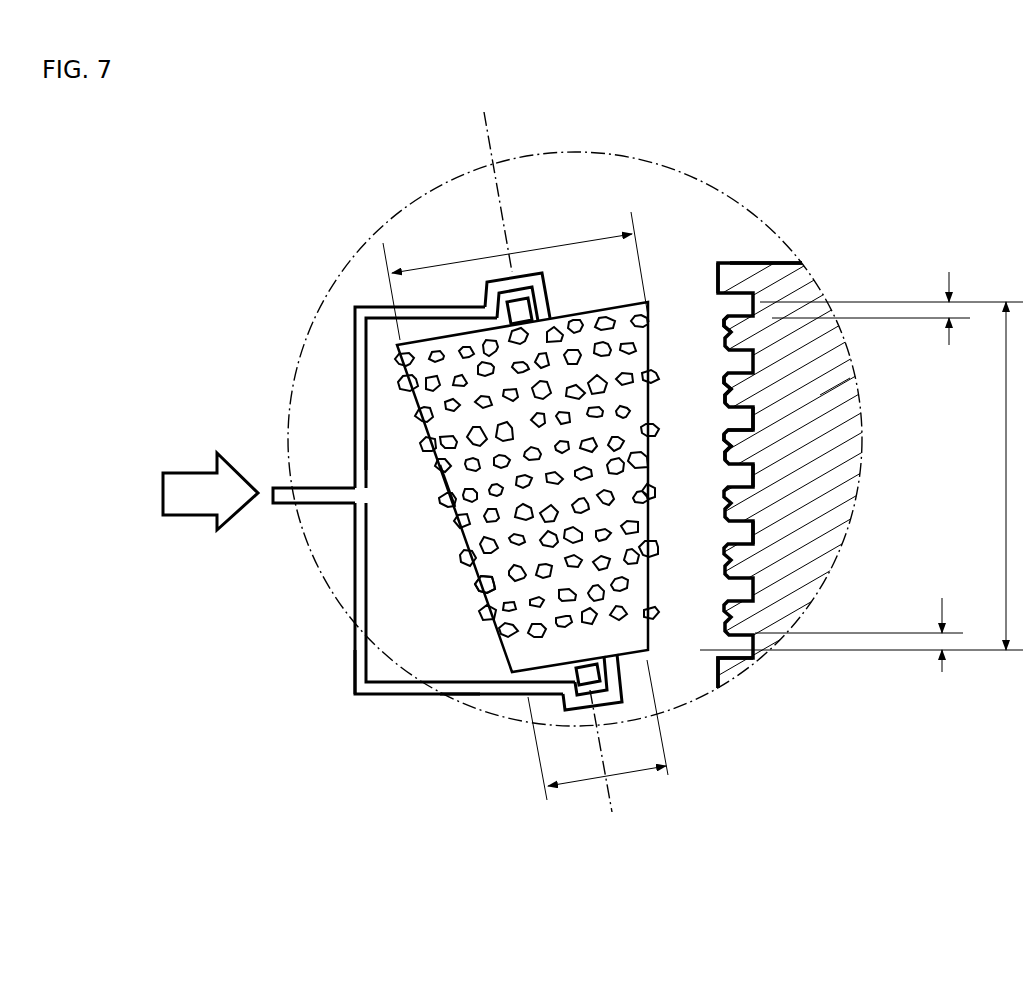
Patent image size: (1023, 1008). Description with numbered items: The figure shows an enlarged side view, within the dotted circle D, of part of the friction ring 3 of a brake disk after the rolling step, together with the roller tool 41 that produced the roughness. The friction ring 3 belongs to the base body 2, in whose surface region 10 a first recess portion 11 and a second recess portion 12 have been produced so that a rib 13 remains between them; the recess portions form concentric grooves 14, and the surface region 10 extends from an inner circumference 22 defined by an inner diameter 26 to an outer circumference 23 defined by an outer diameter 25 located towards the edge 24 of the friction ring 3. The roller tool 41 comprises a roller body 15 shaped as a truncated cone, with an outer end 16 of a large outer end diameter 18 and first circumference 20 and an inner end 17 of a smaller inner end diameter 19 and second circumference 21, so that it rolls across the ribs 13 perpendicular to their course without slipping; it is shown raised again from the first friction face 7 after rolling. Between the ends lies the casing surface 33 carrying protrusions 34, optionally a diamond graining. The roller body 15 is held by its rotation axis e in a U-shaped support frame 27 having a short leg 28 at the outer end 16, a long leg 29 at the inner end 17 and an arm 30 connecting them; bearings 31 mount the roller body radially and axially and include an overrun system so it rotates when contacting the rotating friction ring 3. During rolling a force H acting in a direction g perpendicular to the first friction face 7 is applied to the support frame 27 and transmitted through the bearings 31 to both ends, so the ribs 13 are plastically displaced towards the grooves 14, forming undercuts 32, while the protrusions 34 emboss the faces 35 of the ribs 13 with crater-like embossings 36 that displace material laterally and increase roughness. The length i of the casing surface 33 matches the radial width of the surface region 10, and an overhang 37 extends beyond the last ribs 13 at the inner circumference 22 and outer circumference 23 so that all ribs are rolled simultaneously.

The base body 2 is at (777, 573).
The friction ring 3 is at (835, 392).
The first friction face 7 is at (672, 265).
The surface region 10 is at (720, 465).
The first recess portion 11 is at (743, 418).
The second recess portion 12 is at (743, 475).
The rib 13 is at (747, 445).
The groove 14 is at (719, 240).
The roller body 15 is at (560, 315).
The outer end 16 is at (418, 166).
The inner end 17 is at (720, 729).
The outer end diameter 18 is at (516, 276).
The inner end diameter 19 is at (598, 730).
The first circumference 20 is at (472, 232).
The second circumference 21 is at (636, 677).
The inner circumference 22 is at (772, 690).
The outer circumference 23 is at (743, 236).
The edge 24 is at (775, 247).
The outer diameter 25 is at (764, 107).
The inner diameter 26 is at (927, 782).
The support frame 27 is at (349, 666).
The short leg 28 is at (352, 304).
The long leg 29 is at (460, 694).
The arm 30 is at (362, 452).
The bearing 31 is at (521, 278).
The undercut 32 is at (743, 532).
The casing surface 33 is at (463, 487).
The protrusion 34 is at (527, 627).
The face 35 is at (718, 402).
The crater-like embossing 36 is at (713, 333).
The overhang 37 is at (861, 468).
The roller tool 41 is at (408, 803).
The circle D is at (392, 216).
The rotation axis e is at (545, 465).
The force H is at (240, 491).
The direction g is at (194, 497).
The length i is at (1003, 476).